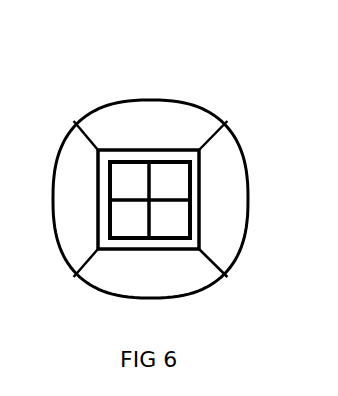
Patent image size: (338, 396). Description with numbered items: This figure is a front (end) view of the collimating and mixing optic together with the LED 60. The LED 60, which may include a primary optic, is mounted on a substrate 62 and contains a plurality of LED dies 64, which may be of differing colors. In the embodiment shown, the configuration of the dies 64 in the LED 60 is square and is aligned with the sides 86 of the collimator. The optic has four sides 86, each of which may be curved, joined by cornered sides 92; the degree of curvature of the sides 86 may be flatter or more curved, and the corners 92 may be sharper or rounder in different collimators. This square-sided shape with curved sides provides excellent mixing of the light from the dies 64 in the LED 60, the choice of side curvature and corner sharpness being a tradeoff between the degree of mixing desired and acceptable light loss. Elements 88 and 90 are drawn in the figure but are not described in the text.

The LED 60 is at (202, 227).
The substrate 62 is at (201, 172).
The LED dies 64 is at (176, 236).
The sides 86 is at (134, 127).
The outer wall 88 is at (158, 101).
The side panel region 90 is at (117, 140).
The corners 92 is at (72, 137).